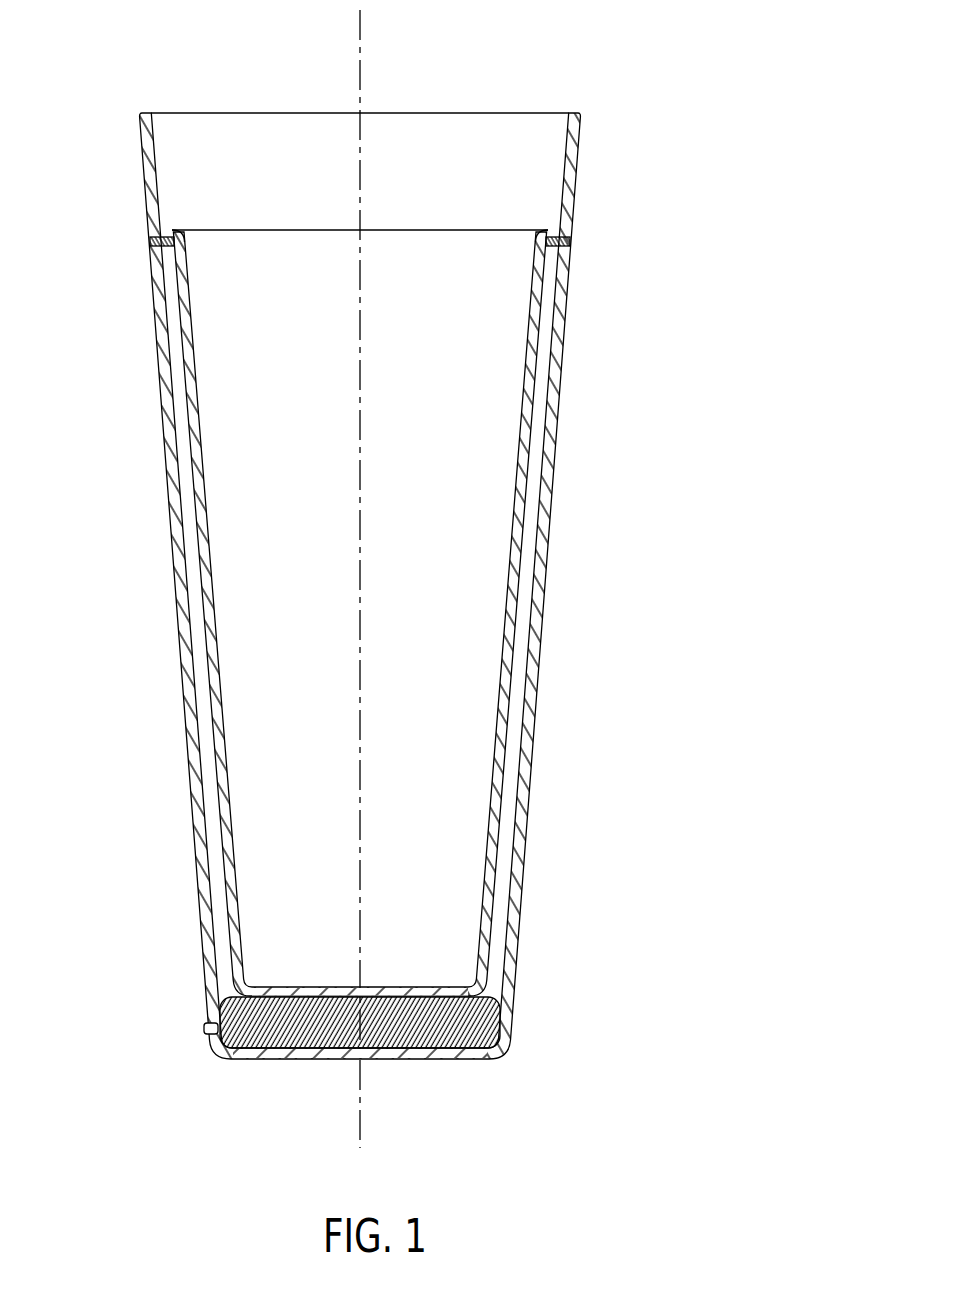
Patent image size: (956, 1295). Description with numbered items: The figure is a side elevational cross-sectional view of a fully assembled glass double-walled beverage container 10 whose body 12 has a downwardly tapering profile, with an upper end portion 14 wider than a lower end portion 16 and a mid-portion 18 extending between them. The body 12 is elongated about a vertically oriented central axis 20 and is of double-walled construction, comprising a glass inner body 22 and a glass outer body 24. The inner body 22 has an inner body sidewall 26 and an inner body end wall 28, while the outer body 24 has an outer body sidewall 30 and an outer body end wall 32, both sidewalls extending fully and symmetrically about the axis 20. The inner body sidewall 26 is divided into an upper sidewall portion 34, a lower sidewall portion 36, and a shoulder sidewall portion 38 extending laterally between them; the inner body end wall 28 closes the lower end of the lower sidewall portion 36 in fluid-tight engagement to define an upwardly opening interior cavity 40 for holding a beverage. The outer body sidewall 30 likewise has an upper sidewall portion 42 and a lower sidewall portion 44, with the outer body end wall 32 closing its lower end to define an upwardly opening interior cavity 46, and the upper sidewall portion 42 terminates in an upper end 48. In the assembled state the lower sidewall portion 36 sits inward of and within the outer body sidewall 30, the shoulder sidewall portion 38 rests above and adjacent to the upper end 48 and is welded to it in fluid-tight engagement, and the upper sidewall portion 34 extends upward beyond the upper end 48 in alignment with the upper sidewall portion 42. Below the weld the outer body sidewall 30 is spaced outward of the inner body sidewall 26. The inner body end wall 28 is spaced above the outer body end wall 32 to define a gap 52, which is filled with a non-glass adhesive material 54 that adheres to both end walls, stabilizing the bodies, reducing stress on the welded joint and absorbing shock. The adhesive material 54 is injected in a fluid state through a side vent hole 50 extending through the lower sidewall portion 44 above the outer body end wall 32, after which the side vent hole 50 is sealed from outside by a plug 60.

The beverage container 10 is at (700, 70).
The body 12 is at (567, 292).
The upper end portion 14 is at (577, 172).
The lower end portion 16 is at (516, 995).
The mid-portion 18 is at (555, 466).
The central axis 20 is at (361, 60).
The inner body 22 is at (545, 379).
The outer body 24 is at (546, 578).
The inner body sidewall 26 is at (200, 667).
The inner body end wall 28 is at (320, 998).
The outer body sidewall 30 is at (196, 866).
The outer body end wall 32 is at (462, 1060).
The upper sidewall portion 34 is at (142, 177).
The lower sidewall portion 36 is at (207, 612).
The shoulder sidewall portion 38 is at (160, 225).
The interior cavity 40 is at (446, 634).
The upper sidewall portion 42 is at (155, 300).
The lower sidewall portion 44 is at (210, 899).
The interior cavity 46 is at (212, 812).
The upper end 48 is at (150, 242).
The side vent hole 50 is at (213, 1058).
The gap 52 is at (486, 1030).
The adhesive material 54 is at (509, 1052).
The plug 60 is at (205, 1028).